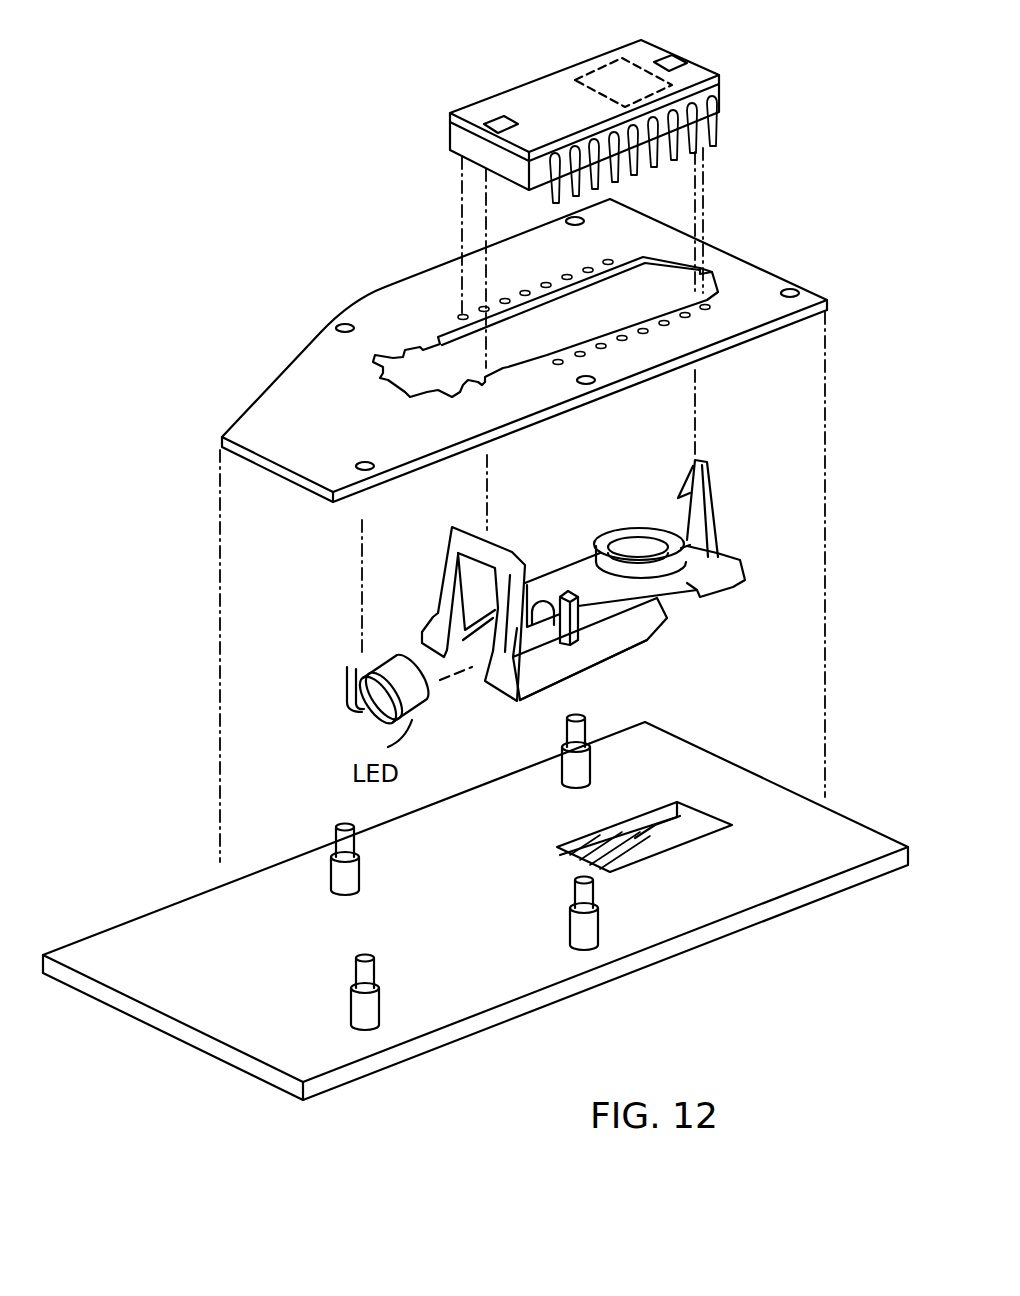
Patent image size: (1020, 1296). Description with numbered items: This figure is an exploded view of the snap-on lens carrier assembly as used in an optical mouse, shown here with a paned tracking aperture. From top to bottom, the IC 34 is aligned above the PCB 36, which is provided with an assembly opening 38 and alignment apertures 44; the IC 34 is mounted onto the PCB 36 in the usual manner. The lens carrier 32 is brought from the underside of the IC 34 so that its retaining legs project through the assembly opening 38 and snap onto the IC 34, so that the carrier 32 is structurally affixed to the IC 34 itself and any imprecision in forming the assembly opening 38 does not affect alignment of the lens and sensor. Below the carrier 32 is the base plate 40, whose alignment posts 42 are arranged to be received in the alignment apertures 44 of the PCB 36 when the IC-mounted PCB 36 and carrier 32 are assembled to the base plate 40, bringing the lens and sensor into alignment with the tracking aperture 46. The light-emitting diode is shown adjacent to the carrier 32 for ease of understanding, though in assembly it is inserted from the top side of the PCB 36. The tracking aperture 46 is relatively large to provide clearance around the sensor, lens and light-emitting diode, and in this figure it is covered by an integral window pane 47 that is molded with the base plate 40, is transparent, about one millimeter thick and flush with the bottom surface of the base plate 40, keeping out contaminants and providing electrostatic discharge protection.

The lens carrier 32 is at (699, 639).
The IC 34 is at (540, 79).
The PCB 36 is at (524, 348).
The assembly opening 38 is at (448, 327).
The base plate 40 is at (475, 901).
The alignment posts 42 is at (590, 927).
The alignment apertures 44 is at (336, 328).
The tracking aperture 46 is at (683, 843).
The window pane 47 is at (663, 833).